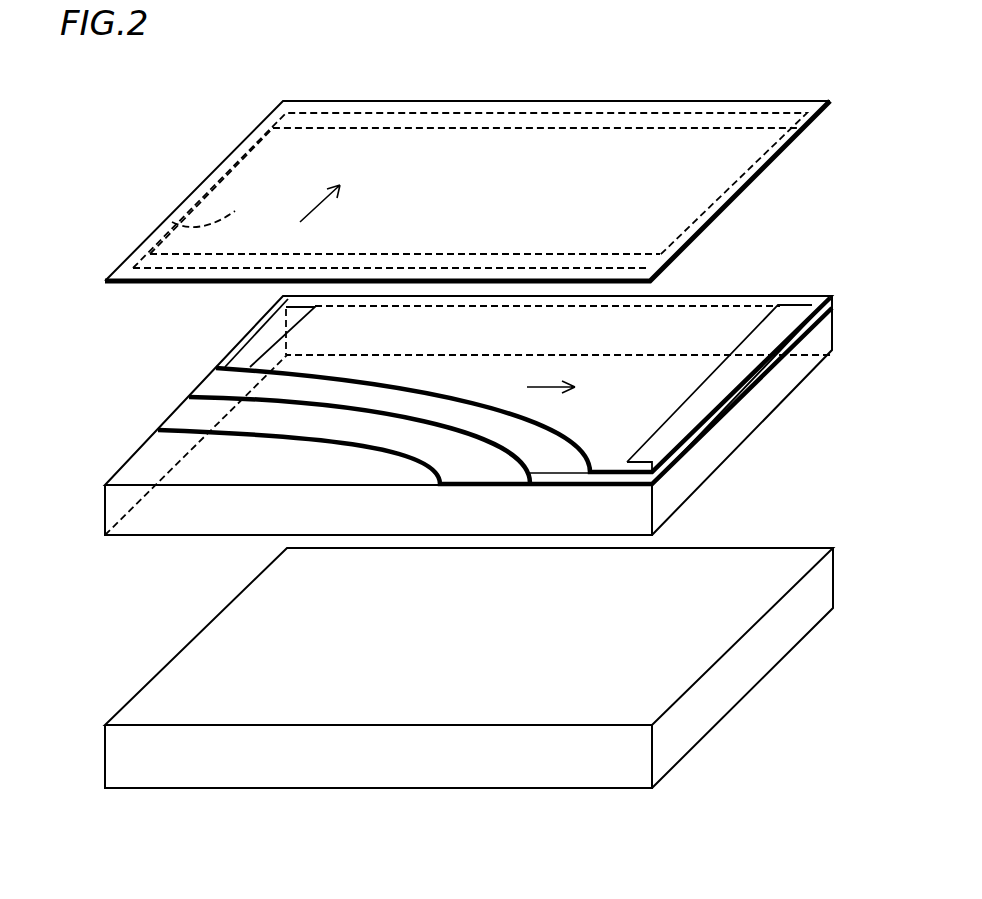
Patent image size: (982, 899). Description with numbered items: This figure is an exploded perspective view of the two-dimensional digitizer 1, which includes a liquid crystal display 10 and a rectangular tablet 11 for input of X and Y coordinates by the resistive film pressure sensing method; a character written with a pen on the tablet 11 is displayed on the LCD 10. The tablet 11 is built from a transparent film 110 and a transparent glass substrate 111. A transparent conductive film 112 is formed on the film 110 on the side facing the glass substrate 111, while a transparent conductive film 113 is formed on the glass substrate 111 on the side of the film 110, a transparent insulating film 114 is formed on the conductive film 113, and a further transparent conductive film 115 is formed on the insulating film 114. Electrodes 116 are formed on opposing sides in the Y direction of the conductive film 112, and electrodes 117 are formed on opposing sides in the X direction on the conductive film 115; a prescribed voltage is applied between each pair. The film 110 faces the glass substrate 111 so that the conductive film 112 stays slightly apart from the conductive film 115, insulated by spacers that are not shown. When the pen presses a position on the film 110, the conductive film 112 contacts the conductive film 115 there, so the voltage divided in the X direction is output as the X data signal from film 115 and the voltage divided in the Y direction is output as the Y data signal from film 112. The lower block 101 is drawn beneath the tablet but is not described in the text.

The 2-dimensional digitizer 1 is at (479, 874).
The liquid crystal display 10 is at (758, 718).
The rectangular tablet 11 is at (876, 94).
The backlight unit 101 is at (232, 629).
The transparent film 110 is at (487, 157).
The transparent glass substrate 111 is at (722, 442).
The transparent conductive film 112 is at (177, 226).
The transparent conductive film 113 is at (193, 419).
The transparent insulating film 114 is at (223, 388).
The transparent conductive film 115 is at (308, 338).
The electrodes 116 is at (639, 118).
The electrodes 117 is at (247, 360).